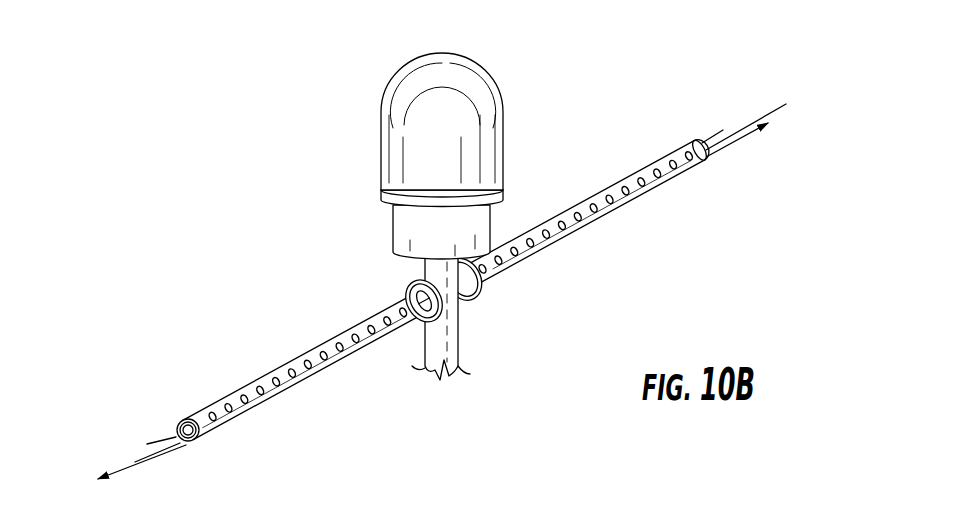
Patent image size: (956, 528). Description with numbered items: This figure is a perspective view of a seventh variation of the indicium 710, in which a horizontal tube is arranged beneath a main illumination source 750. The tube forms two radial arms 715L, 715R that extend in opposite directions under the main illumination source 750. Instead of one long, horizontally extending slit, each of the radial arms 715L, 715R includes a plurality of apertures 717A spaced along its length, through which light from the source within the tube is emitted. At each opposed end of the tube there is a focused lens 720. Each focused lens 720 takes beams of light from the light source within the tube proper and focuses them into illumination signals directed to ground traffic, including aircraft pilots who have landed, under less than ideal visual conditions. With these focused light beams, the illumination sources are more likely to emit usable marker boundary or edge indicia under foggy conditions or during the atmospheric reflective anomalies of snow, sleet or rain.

The indicium 710 is at (297, 91).
The left radial arm 715L is at (305, 357).
The right radial arm 715R is at (612, 186).
The apertures 717A is at (372, 336).
The focused lens 720 is at (199, 440).
The main illumination source 750 is at (393, 233).